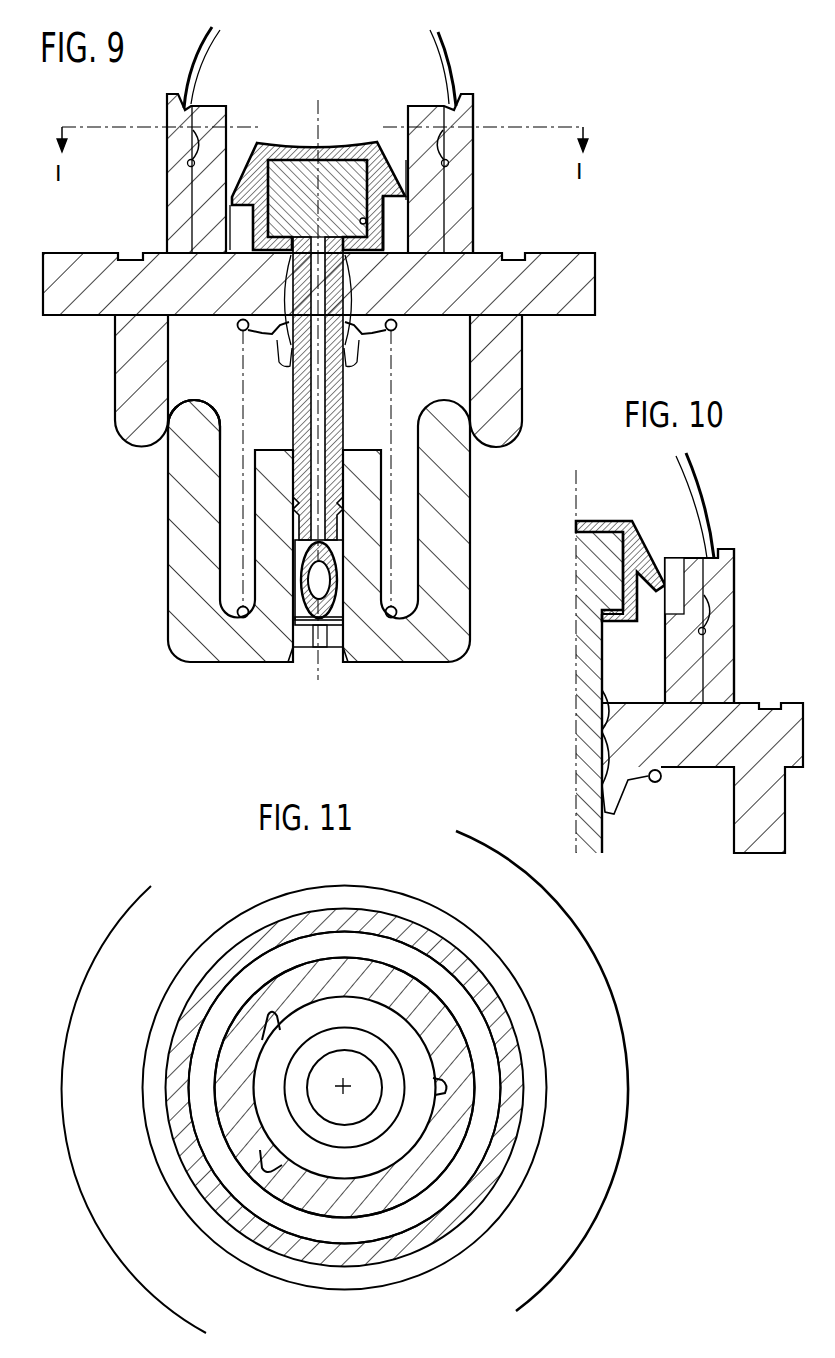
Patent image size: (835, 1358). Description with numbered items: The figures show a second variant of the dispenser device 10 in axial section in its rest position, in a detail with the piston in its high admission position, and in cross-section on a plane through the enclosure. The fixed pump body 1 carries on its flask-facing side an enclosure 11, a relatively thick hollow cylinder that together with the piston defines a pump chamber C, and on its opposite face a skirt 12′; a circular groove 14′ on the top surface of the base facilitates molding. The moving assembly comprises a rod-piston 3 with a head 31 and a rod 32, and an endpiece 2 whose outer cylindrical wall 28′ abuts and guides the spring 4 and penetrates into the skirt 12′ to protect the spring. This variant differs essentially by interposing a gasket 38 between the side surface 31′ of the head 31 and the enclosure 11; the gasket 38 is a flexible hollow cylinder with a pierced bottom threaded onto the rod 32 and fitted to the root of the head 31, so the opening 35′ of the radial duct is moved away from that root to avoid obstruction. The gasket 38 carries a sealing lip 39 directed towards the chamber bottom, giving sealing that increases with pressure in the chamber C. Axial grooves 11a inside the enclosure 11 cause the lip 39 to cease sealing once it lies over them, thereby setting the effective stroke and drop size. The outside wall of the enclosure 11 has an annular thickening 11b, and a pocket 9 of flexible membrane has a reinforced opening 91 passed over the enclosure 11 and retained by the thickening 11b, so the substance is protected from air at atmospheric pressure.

In FIG. 9, the pump body 1 is at (34, 265).
In FIG. 11, the pump body 1 is at (596, 1160).
In FIG. 9, the endpiece 2 is at (163, 583).
In FIG. 9, the rod-piston 3 is at (179, 438).
In FIG. 9, the spring 4 is at (390, 460).
In FIG. 9, the pocket 9 is at (444, 50).
In FIG. 10, the pocket 9 is at (690, 479).
In FIG. 9, the dispenser device 10 is at (556, 362).
In FIG. 9, the enclosure 11 is at (200, 137).
In FIG. 10, the enclosure 11 is at (688, 668).
In FIG. 11, the enclosure 11 is at (462, 1083).
In FIG. 9, the axial grooves 11a is at (418, 112).
In FIG. 10, the axial grooves 11a is at (680, 577).
In FIG. 11, the axial grooves 11a is at (465, 1080).
In FIG. 9, the annular thickening 11b is at (196, 160).
In FIG. 10, the annular thickening 11b is at (706, 614).
In FIG. 9, the skirt 12′ is at (137, 378).
In FIG. 9, the circular groove 14′ is at (133, 256).
In FIG. 9, the outer cylindrical wall 28′ is at (182, 497).
In FIG. 9, the head 31 is at (233, 200).
In FIG. 10, the head 31 is at (583, 560).
In FIG. 11, the head 31 is at (340, 1057).
In FIG. 9, the side surface 31′ is at (384, 213).
In FIG. 9, the rod 32 is at (318, 449).
In FIG. 10, the rod 32 is at (593, 677).
In FIG. 9, the opening 35′ is at (287, 268).
In FIG. 9, the gasket 38 is at (342, 238).
In FIG. 10, the gasket 38 is at (628, 584).
In FIG. 11, the gasket 38 is at (273, 1060).
In FIG. 9, the sealing lip 39 is at (410, 172).
In FIG. 10, the sealing lip 39 is at (647, 555).
In FIG. 9, the opening 91 is at (458, 116).
In FIG. 10, the opening 91 is at (725, 644).
In FIG. 11, the opening 91 is at (490, 1094).
In FIG. 9, the pump chamber C is at (247, 235).